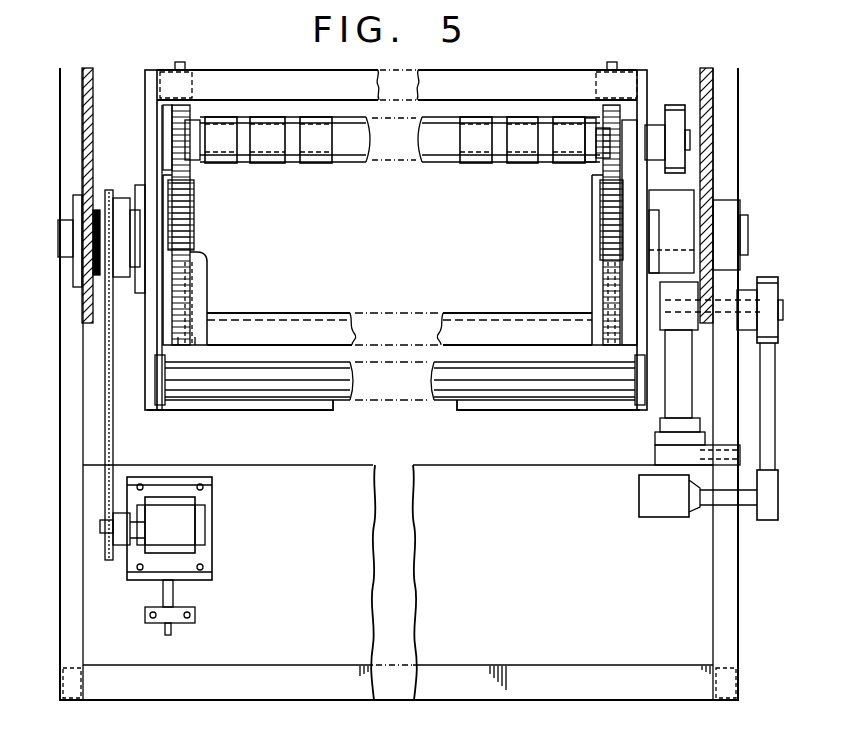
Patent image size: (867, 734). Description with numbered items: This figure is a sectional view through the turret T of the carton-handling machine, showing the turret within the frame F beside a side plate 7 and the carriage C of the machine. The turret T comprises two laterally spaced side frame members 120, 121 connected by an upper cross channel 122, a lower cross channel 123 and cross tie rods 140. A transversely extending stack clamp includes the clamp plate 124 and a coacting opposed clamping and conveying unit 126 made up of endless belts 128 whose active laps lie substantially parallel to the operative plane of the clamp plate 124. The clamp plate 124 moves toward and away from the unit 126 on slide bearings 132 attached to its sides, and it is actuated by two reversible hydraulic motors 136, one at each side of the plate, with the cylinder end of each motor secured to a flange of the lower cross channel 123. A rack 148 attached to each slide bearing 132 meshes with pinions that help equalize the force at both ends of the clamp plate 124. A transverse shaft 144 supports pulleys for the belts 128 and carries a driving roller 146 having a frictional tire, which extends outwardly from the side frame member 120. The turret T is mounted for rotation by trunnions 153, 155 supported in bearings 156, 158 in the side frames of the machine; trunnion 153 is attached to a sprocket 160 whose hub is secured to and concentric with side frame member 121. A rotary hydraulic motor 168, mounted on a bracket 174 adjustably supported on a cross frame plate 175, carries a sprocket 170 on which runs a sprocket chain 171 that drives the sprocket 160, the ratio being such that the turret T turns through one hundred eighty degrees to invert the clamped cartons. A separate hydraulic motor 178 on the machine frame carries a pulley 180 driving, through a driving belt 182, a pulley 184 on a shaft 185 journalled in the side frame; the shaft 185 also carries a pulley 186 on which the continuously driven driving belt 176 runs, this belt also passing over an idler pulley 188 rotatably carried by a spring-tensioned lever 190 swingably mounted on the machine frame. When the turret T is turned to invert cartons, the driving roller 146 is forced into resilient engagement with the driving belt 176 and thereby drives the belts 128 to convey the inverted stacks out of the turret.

The side plate 7 is at (706, 70).
The frame F is at (68, 607).
The turret T is at (142, 366).
The carriage C is at (306, 308).
The side frame member 120 is at (643, 78).
The side frame member 121 is at (150, 80).
The upper cross channel 122 is at (193, 80).
The lower cross channel 123 is at (228, 406).
The clamp plate 124 is at (462, 322).
The clamping and conveying unit 126 is at (448, 170).
The endless belts 128 is at (320, 158).
The slide bearings 132 is at (193, 229).
The reversible hydraulic motors 136 is at (195, 285).
The cross tie rods 140 is at (501, 382).
The transverse shaft 144 is at (600, 150).
The driving roller 146 is at (675, 112).
The rack 148 is at (190, 196).
The trunnion 153 is at (95, 232).
The trunnion 155 is at (694, 240).
The bearing 156 is at (78, 200).
The bearing 158 is at (718, 215).
The sprocket 160 is at (108, 192).
The hydraulic motor 168 is at (188, 507).
The sprocket 170 is at (112, 555).
The sprocket chain 171 is at (113, 428).
The bracket 174 is at (205, 548).
The cross frame plate 175 is at (318, 600).
The driving belt 176 is at (675, 370).
The hydraulic motor 178 is at (667, 500).
The pulley 180 is at (775, 487).
The driving belt 182 is at (772, 362).
The pulley 184 is at (778, 290).
The shaft 185 is at (780, 310).
The pulley 186 is at (660, 312).
The idler pulley 188 is at (662, 420).
The lever 190 is at (672, 450).